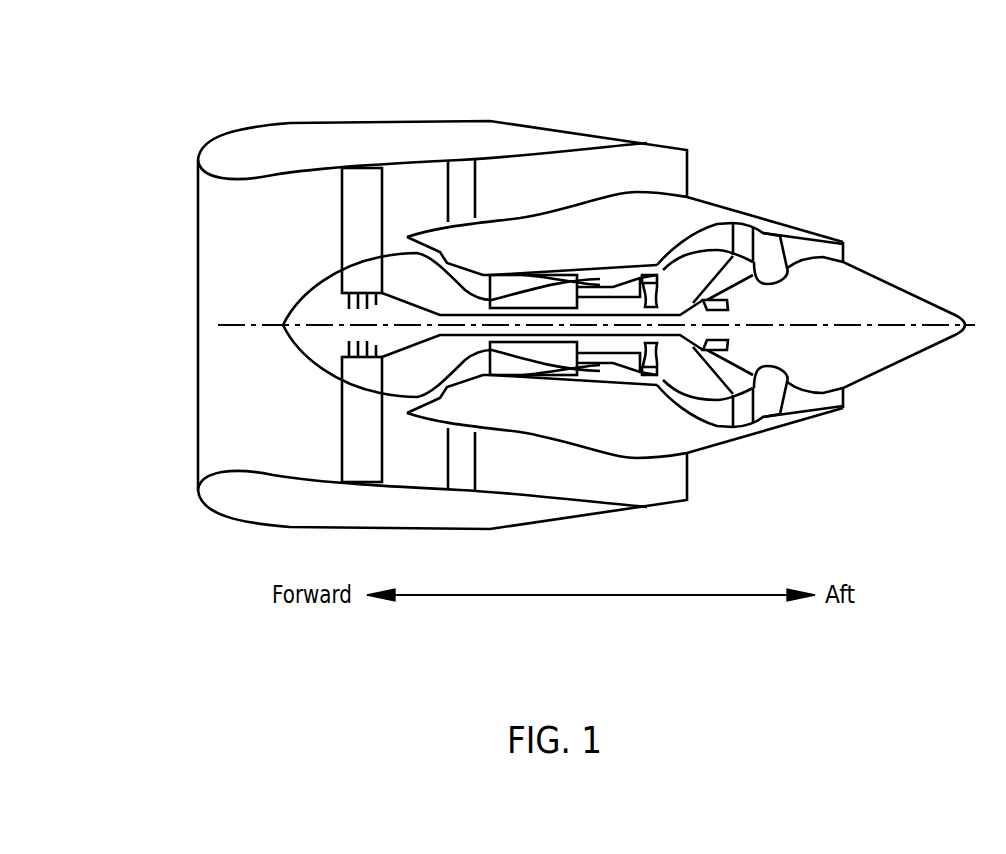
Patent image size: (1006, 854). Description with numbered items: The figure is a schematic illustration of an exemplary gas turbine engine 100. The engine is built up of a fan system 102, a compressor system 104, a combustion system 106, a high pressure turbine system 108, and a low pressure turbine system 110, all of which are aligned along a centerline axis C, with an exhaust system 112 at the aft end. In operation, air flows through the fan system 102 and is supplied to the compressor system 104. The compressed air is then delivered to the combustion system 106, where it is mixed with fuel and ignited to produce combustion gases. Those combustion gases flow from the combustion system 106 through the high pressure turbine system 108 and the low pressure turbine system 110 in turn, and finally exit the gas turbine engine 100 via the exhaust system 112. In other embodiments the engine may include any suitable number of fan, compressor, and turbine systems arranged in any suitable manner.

The gas turbine engine 100 is at (185, 116).
The fan system 102 is at (372, 203).
The compressor system 104 is at (502, 287).
The combustion system 106 is at (615, 282).
The high pressure turbine system 108 is at (654, 373).
The low pressure turbine system 110 is at (718, 242).
The exhaust system 112 is at (851, 238).
The centerline axis C is at (923, 323).